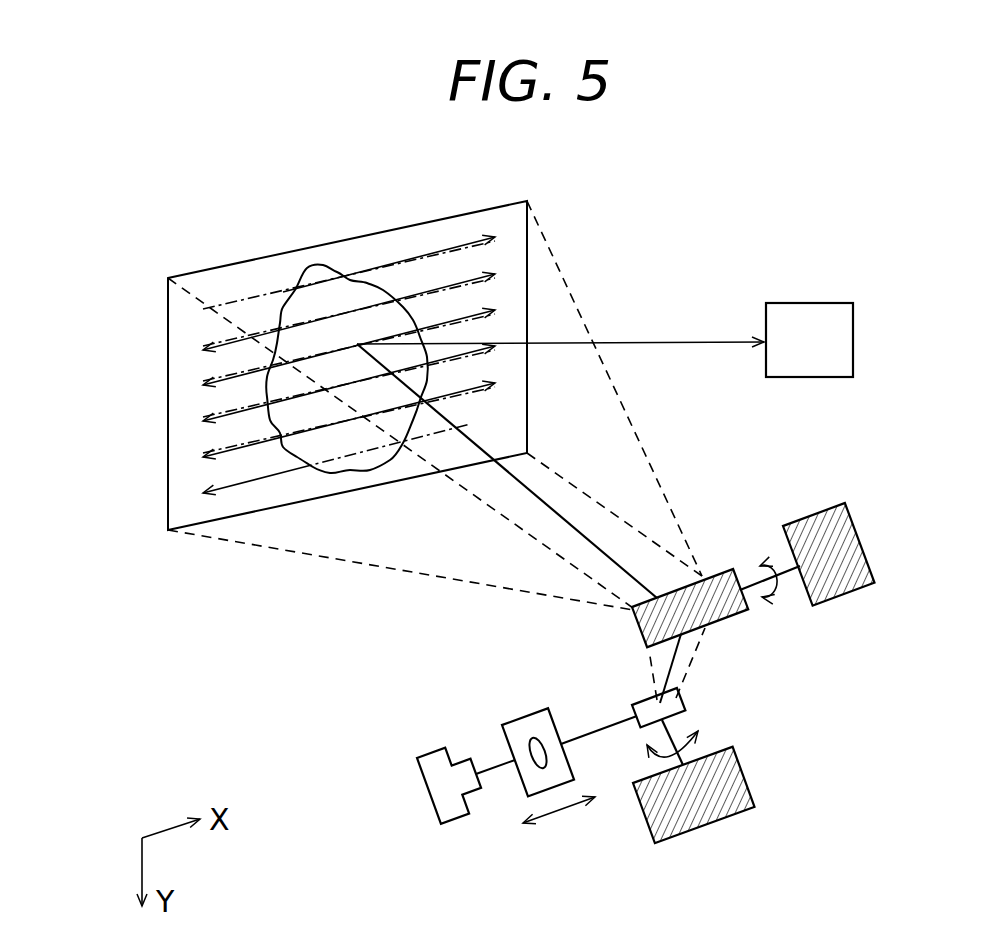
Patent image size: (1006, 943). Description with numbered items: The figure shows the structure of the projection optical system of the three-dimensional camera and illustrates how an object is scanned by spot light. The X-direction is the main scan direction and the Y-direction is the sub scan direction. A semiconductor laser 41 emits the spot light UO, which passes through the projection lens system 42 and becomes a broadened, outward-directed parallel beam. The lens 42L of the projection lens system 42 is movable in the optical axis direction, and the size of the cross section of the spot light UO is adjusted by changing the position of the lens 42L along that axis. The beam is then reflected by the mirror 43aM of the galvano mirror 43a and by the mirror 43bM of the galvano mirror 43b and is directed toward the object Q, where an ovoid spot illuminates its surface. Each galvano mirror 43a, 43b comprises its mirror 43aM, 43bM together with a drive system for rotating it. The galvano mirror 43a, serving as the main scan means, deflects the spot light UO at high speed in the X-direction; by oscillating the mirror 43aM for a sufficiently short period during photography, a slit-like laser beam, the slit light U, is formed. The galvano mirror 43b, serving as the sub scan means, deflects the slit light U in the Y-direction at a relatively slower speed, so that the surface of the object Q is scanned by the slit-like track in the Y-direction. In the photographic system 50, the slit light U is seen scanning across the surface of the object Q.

The photographic system 50 is at (812, 303).
The mirror of galvano mirror 43b 43bM is at (723, 570).
The galvano mirror 43b is at (829, 619).
The slit light U is at (578, 522).
The object Q is at (350, 473).
The mirror of galvano mirror 43a 43aM is at (686, 698).
The galvano mirror 43a is at (793, 762).
The lens 42L is at (540, 742).
The projection lens system 42 is at (524, 783).
The semiconductor laser 41 is at (420, 778).
The spot light UO is at (500, 762).